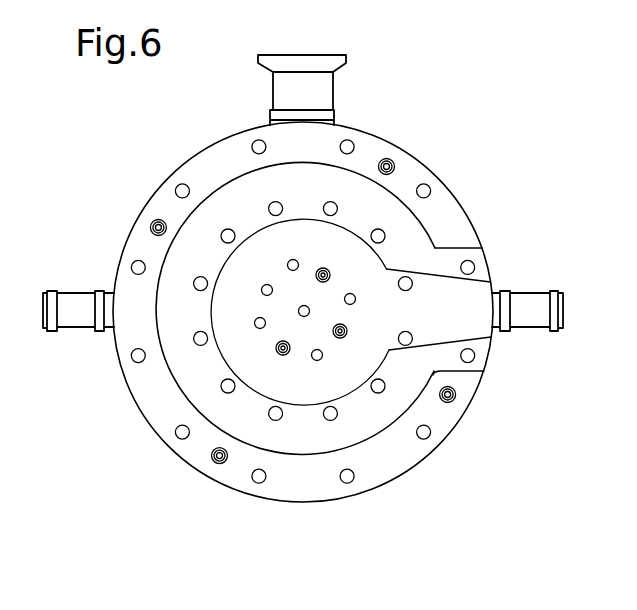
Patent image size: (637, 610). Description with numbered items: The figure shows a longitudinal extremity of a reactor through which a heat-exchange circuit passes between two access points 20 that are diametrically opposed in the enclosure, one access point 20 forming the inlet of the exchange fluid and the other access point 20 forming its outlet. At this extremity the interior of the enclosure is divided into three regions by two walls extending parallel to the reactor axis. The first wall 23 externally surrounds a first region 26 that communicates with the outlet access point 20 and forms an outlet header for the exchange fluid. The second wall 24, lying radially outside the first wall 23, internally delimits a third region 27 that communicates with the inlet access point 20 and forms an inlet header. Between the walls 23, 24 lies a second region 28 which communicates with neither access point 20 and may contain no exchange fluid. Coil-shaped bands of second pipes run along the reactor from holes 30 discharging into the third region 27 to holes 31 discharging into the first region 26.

The access point 20 is at (82, 305).
The first wall 23 is at (418, 397).
The second wall 24 is at (285, 454).
The first region 26 is at (447, 298).
The third region 27 is at (158, 397).
The second region 28 is at (227, 415).
The hole 30 is at (350, 140).
The hole 31 is at (356, 301).